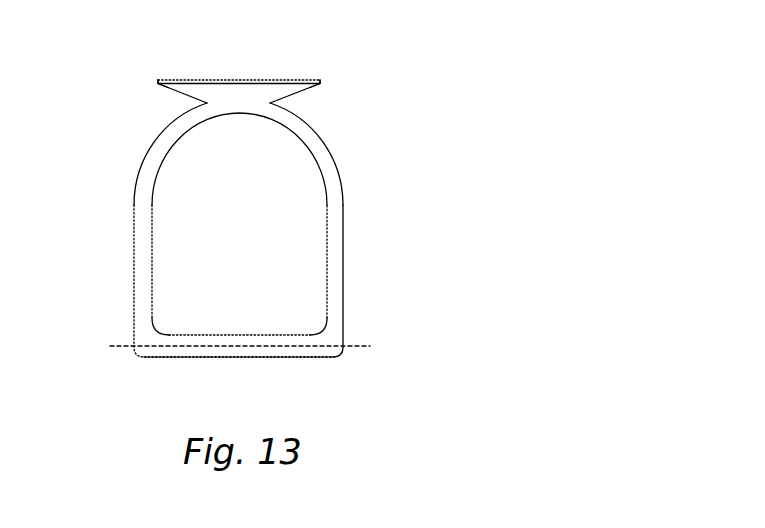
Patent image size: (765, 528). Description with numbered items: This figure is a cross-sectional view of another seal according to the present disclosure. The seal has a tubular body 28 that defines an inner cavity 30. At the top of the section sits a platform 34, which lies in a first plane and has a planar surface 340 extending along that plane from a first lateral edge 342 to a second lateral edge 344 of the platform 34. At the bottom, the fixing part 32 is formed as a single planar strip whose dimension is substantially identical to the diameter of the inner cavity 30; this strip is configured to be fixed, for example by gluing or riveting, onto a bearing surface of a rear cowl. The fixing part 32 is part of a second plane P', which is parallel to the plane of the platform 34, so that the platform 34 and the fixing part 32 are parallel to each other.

The tubular body 28 is at (335, 270).
The inner cavity 30 is at (312, 223).
The fixing part 32 is at (157, 354).
The platform 34 is at (240, 86).
The planar surface 340 is at (264, 80).
The first lateral edge 342 is at (157, 81).
The second lateral edge 344 is at (321, 81).
The second plane P' is at (255, 327).